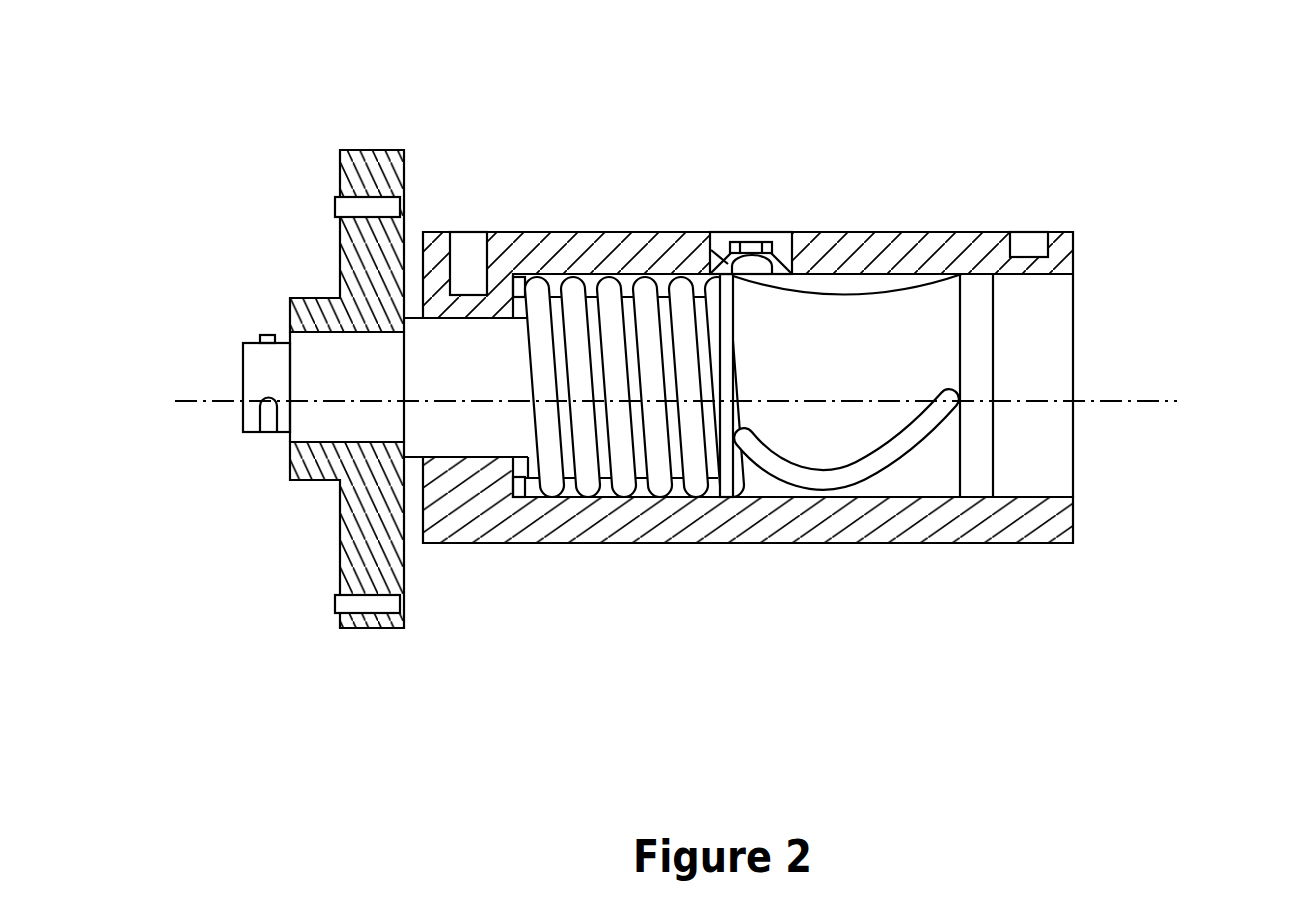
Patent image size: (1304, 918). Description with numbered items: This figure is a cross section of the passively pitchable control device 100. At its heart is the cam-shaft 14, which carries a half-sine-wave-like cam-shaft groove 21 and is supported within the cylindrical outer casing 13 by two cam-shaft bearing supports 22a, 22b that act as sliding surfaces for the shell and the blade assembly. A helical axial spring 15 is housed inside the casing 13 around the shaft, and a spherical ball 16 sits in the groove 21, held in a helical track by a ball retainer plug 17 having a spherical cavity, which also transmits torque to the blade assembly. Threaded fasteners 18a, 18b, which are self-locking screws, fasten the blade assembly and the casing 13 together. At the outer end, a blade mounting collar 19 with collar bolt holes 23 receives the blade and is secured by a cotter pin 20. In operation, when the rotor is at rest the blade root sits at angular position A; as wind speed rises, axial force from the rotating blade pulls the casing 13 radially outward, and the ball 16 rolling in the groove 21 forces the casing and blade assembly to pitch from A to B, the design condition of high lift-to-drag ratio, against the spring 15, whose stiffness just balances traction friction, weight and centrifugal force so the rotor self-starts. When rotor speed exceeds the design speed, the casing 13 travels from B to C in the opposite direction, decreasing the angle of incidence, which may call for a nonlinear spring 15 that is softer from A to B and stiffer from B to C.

The passively pitchable control device 100 is at (462, 84).
The outer casing 13 is at (560, 543).
The cam-shaft 14 is at (940, 360).
The helical axial spring 15 is at (570, 300).
The spherical ball 16 is at (840, 233).
The ball retainer plug 17 is at (742, 240).
The threaded fastener 18a is at (468, 290).
The threaded fastener 18b is at (1030, 258).
The blade mounting collar 19 is at (345, 177).
The cotter pin 20 is at (267, 357).
The cam-shaft groove 21 is at (900, 438).
The cam-shaft bearing support 22a is at (978, 480).
The cam-shaft bearing support 22b is at (737, 497).
The collar bolt holes 23 is at (358, 608).
The angular position A is at (748, 440).
The angular position B is at (823, 478).
The angular position C is at (937, 412).